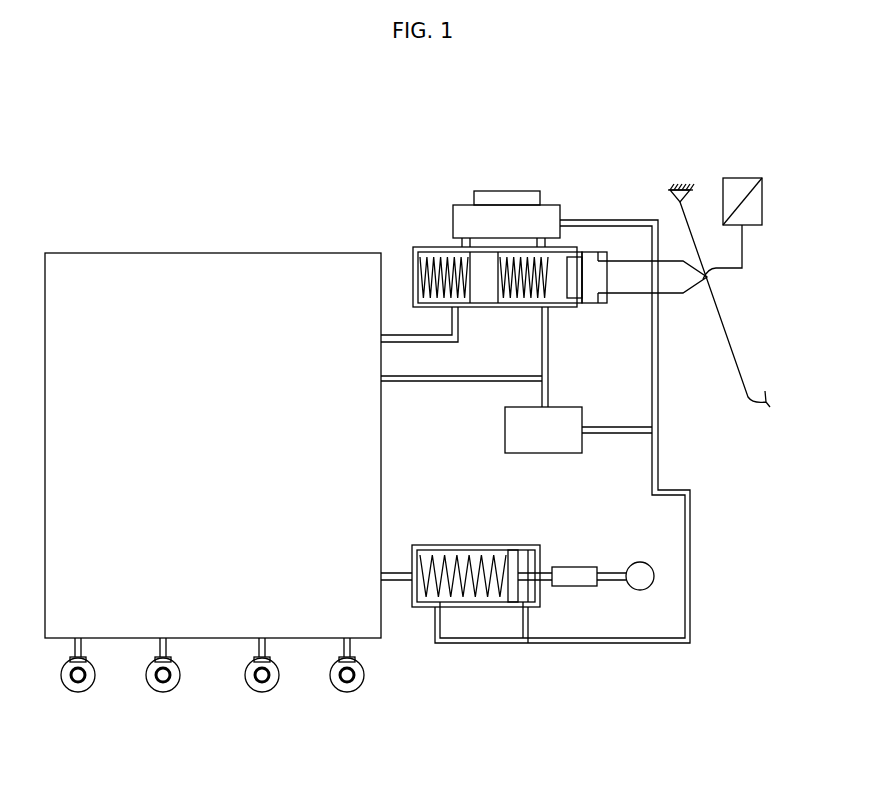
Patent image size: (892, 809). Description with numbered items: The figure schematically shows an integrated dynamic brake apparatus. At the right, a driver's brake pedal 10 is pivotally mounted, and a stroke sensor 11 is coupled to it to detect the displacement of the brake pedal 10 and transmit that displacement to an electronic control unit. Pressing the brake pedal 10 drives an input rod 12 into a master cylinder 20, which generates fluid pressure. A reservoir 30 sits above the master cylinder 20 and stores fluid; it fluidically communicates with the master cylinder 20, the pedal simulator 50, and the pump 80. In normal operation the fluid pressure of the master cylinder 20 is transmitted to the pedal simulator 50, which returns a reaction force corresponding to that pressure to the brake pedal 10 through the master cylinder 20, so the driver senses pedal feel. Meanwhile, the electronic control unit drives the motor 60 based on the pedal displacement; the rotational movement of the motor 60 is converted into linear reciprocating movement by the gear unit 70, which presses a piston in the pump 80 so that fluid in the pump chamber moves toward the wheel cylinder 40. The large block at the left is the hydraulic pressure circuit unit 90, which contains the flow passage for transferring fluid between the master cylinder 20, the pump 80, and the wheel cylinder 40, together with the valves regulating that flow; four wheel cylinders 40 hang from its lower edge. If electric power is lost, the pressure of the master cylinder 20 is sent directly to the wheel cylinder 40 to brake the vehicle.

The brake pedal 10 is at (727, 323).
The stroke sensor 11 is at (740, 178).
The input rod 12 is at (668, 294).
The master cylinder 20 is at (418, 247).
The reservoir 30 is at (502, 208).
The wheel cylinder 40 is at (95, 681).
The pedal simulator 50 is at (537, 455).
The motor 60 is at (655, 572).
The gear unit 70 is at (580, 567).
The pump 80 is at (478, 545).
The hydraulic pressure circuit unit 90 is at (212, 252).